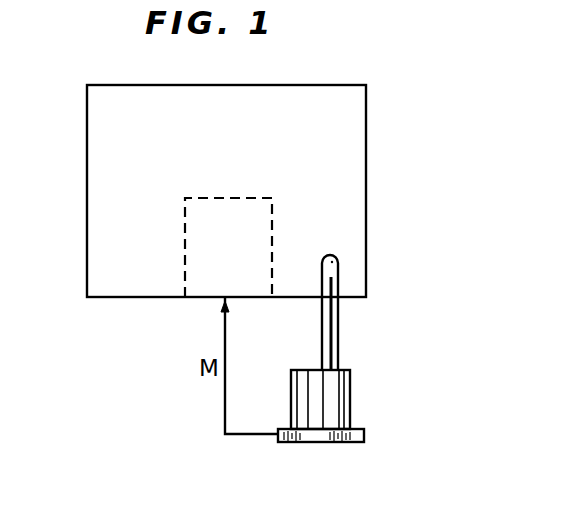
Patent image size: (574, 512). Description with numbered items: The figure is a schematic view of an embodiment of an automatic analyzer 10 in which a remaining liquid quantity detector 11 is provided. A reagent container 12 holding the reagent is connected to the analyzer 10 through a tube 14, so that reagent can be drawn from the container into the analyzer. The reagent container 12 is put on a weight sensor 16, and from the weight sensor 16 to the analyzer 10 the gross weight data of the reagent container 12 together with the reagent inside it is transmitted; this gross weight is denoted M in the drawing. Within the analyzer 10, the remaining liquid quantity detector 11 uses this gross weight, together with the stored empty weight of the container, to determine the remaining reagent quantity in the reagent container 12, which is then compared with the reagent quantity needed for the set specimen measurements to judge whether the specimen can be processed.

The automatic analyzer 10 is at (366, 150).
The remaining liquid quantity detector 11 is at (205, 301).
The reagent container 12 is at (350, 400).
The tube 14 is at (334, 326).
The weight sensor 16 is at (364, 435).